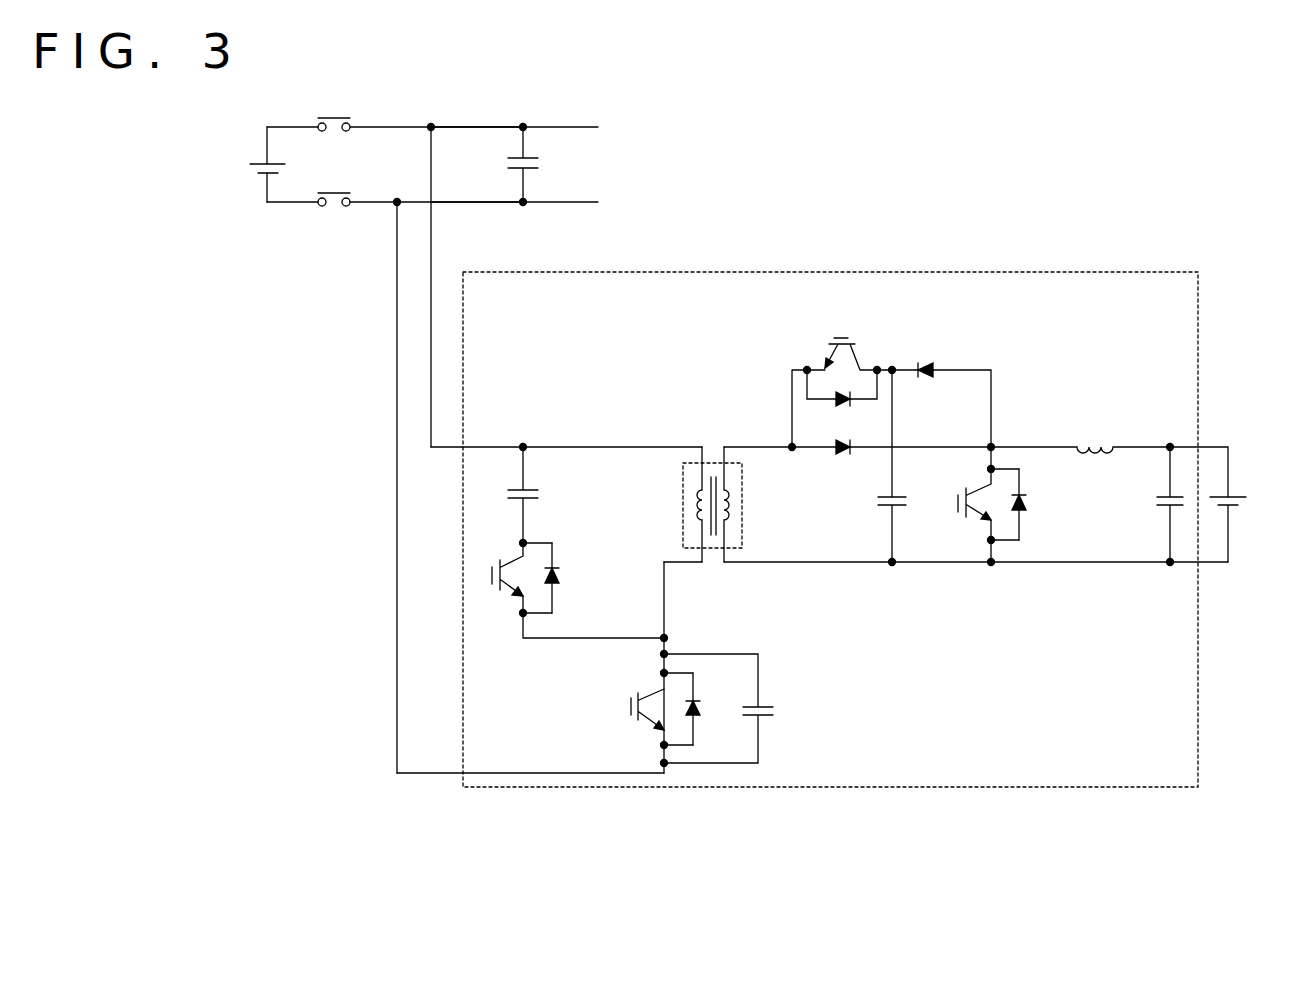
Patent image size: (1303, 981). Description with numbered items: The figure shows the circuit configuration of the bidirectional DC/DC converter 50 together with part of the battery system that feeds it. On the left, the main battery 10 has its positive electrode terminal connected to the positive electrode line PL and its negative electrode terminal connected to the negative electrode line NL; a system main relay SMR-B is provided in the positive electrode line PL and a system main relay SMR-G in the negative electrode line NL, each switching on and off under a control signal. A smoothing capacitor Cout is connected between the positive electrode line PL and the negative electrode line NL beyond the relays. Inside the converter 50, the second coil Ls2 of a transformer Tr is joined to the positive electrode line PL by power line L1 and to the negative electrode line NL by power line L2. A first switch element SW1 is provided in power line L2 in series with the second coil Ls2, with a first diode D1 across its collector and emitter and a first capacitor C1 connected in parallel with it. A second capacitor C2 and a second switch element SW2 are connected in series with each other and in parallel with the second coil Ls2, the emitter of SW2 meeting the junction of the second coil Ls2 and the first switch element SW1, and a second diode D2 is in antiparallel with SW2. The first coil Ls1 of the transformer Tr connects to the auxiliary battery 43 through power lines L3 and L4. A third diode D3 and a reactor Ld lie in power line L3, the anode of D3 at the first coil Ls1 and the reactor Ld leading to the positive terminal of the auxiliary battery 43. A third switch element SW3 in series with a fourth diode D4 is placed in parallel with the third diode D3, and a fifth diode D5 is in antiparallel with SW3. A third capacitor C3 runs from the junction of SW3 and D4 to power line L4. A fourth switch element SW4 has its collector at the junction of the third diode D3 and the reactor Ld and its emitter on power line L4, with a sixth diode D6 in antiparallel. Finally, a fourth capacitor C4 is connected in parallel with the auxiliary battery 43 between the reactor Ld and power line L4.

The main battery 10 is at (248, 172).
The system main relay SMR-B is at (335, 112).
The system main relay SMR-G is at (333, 210).
The positive electrode line PL is at (464, 126).
The negative electrode line NL is at (463, 206).
The capacitor Cout is at (543, 163).
The DC/DC converter 50 is at (1020, 790).
The power line L1 is at (584, 445).
The power line L2 is at (516, 771).
The power line L3 is at (757, 445).
The power line L4 is at (800, 565).
The transformer Tr is at (704, 477).
The first coil Ls1 is at (737, 510).
The second coil Ls2 is at (688, 518).
The first capacitor C1 is at (777, 712).
The second capacitor C2 is at (540, 494).
The third capacitor C3 is at (880, 501).
The fourth capacitor C4 is at (1155, 503).
The first switch element SW1 is at (628, 708).
The second switch element SW2 is at (494, 596).
The third switch element SW3 is at (842, 334).
The fourth switch element SW4 is at (958, 516).
The first diode D1 is at (700, 702).
The second diode D2 is at (560, 572).
The third diode D3 is at (845, 455).
The fourth diode D4 is at (924, 362).
The fifth diode D5 is at (848, 406).
The sixth diode D6 is at (1027, 502).
The reactor Ld is at (1096, 440).
The auxiliary battery 43 is at (1250, 502).